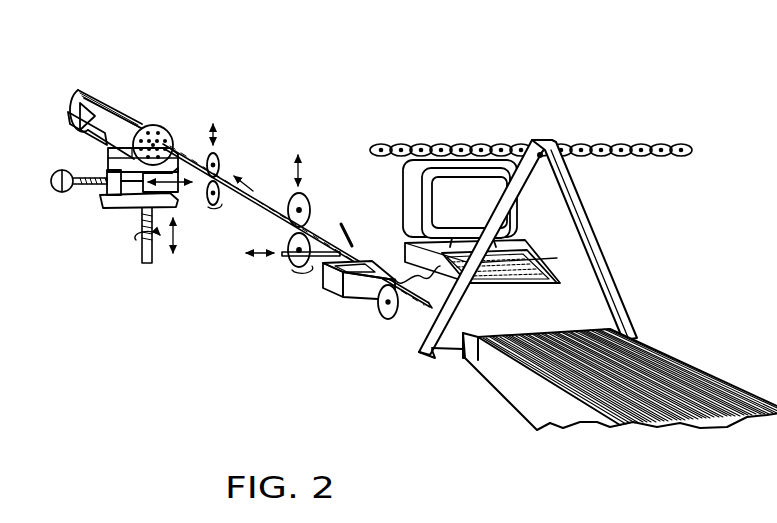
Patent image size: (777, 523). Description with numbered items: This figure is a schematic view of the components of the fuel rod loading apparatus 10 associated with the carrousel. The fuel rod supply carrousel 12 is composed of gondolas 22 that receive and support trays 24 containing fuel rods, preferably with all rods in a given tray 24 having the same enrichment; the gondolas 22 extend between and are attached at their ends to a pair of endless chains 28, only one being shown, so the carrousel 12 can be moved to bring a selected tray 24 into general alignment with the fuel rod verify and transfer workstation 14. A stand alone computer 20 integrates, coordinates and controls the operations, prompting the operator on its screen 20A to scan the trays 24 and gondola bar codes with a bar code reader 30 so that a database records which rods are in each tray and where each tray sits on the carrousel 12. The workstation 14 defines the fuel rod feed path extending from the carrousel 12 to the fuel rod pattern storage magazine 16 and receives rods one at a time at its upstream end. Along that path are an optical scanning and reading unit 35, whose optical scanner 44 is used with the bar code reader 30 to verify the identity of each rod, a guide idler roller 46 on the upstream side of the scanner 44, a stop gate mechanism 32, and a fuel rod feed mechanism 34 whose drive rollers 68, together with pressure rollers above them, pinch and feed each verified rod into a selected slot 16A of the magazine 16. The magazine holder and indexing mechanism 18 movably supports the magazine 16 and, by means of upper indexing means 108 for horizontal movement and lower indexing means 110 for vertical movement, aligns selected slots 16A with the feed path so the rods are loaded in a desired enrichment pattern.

The fuel rod loading apparatus 10 is at (523, 96).
The fuel rod supply carrousel 12 is at (590, 232).
The fuel rod verify and transfer workstation 14 is at (248, 272).
The fuel rod pattern storage magazine 16 is at (127, 92).
The elongated slots 16A is at (166, 138).
The magazine holder and indexing mechanism 18 is at (111, 225).
The stand alone computer 20 is at (477, 182).
The computer screen 20A is at (480, 190).
The gondolas 22 is at (590, 395).
The trays 24 is at (507, 377).
The endless chains 28 is at (612, 141).
The bar code reader 30 is at (347, 222).
The stop gate mechanism 32 is at (276, 259).
The fuel rod feed mechanism 34 is at (263, 176).
The optical scanning and reading unit 35 is at (285, 266).
The optical scanner 44 is at (332, 288).
The guide idler roller 46 is at (384, 308).
The drive rollers 68 is at (284, 240).
The upper indexing means 108 is at (50, 195).
The lower indexing means 110 is at (128, 227).